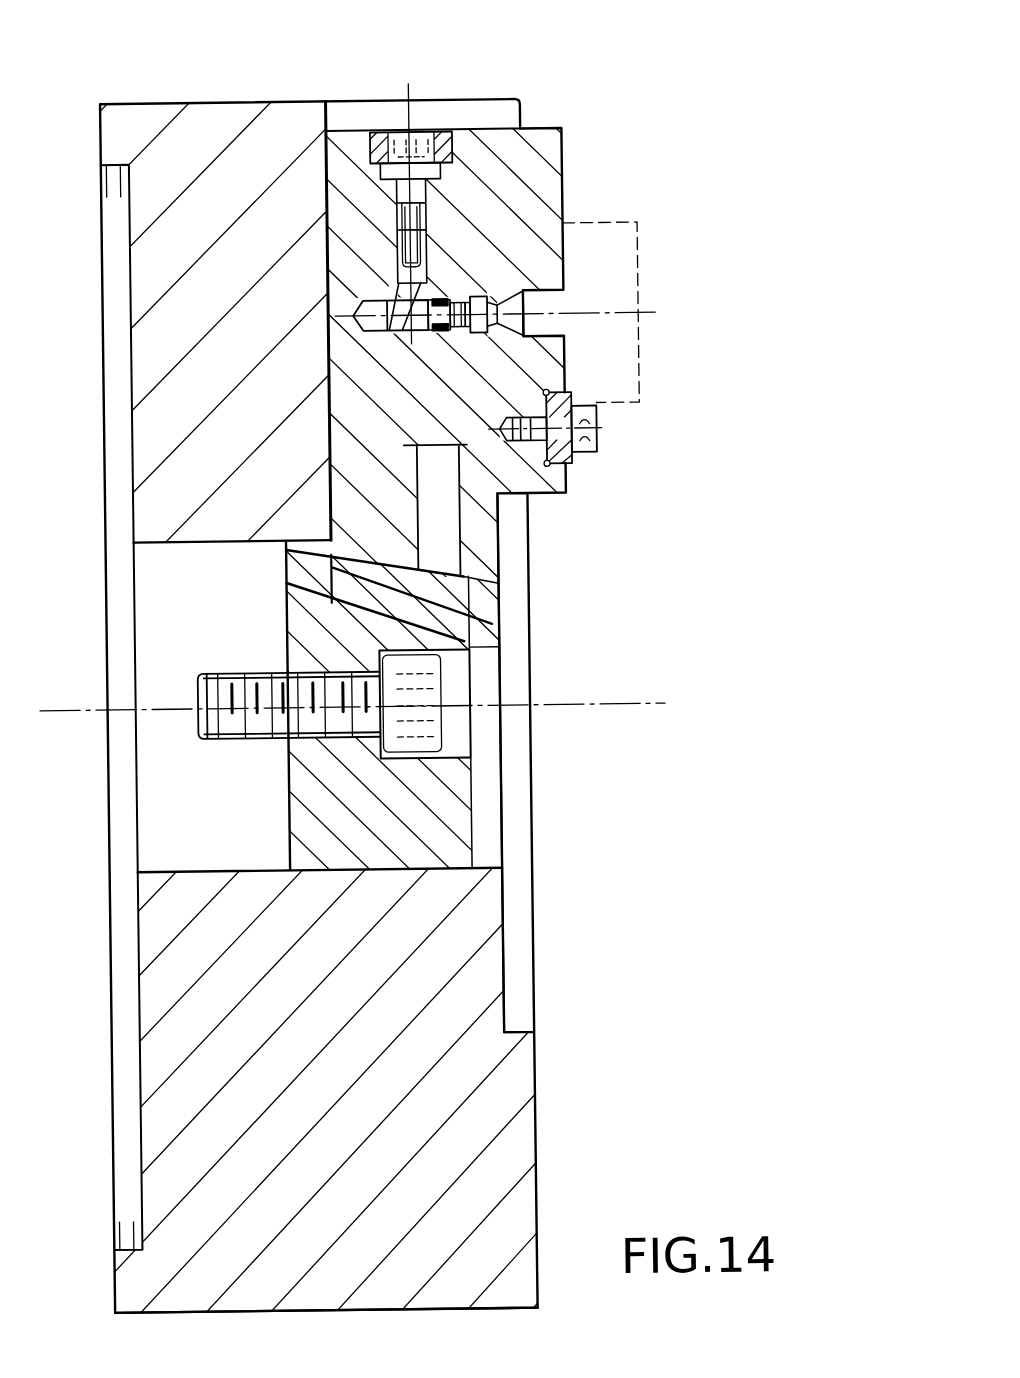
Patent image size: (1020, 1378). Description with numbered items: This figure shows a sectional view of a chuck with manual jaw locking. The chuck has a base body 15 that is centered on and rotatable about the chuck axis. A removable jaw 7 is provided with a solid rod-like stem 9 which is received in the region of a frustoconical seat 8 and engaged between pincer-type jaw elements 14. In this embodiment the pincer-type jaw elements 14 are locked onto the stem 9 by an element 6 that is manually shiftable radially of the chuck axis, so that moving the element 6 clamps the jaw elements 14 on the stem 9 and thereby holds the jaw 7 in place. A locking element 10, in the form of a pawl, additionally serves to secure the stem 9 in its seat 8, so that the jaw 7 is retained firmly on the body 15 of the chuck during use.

The manually shiftable element 6 is at (403, 256).
The removable jaw 7 is at (622, 356).
The frustoconical seat 8 is at (584, 395).
The stem 9 is at (529, 301).
The locking element 10 is at (457, 322).
The pincer-type jaw element 14 is at (457, 322).
The base body 15 is at (478, 1082).